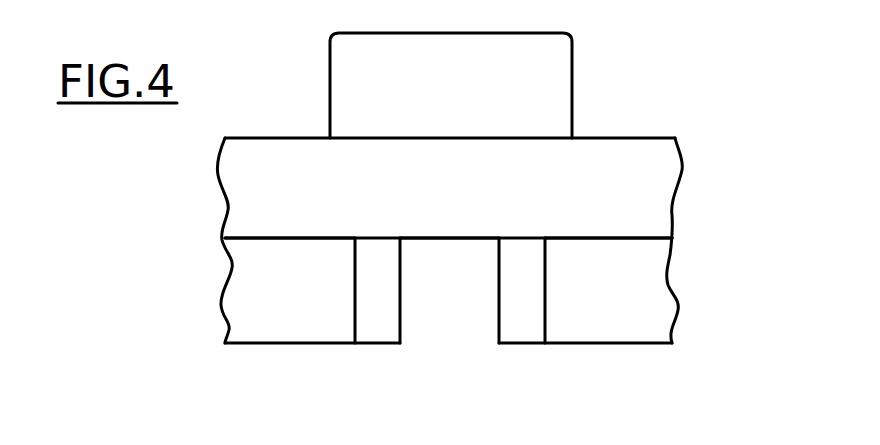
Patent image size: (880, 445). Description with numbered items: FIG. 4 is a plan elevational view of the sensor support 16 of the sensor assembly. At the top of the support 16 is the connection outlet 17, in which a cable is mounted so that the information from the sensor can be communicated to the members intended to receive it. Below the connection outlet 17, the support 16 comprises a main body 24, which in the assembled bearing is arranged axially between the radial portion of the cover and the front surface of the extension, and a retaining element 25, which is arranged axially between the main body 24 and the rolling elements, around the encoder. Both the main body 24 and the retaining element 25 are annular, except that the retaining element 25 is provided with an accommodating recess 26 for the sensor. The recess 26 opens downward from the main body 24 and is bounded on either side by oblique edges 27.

The support 16 is at (682, 304).
The connection outlet 17 is at (530, 103).
The main body 24 is at (593, 202).
The retaining element 25 is at (593, 270).
The accommodating recess 26 is at (435, 303).
The oblique edges 27 is at (373, 308).